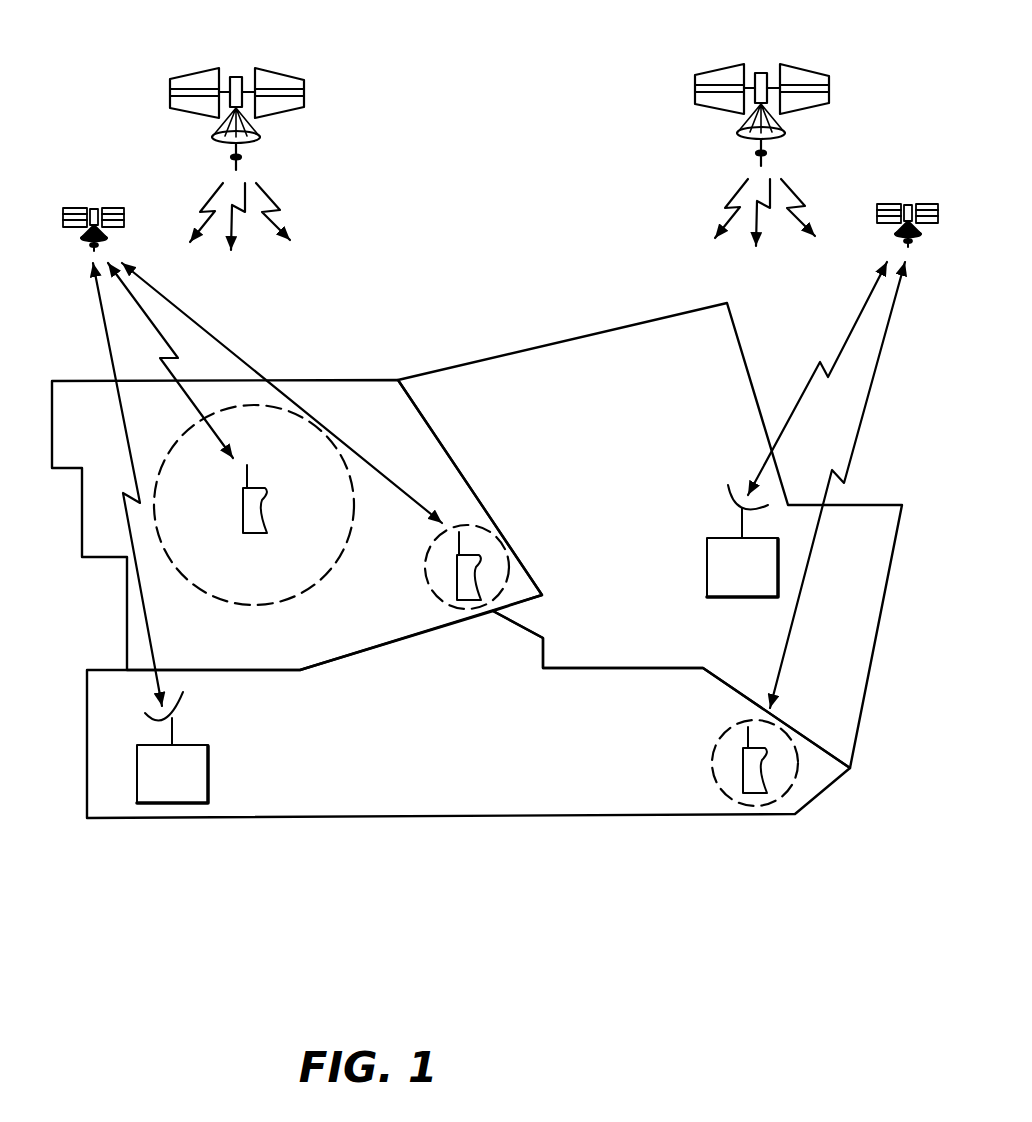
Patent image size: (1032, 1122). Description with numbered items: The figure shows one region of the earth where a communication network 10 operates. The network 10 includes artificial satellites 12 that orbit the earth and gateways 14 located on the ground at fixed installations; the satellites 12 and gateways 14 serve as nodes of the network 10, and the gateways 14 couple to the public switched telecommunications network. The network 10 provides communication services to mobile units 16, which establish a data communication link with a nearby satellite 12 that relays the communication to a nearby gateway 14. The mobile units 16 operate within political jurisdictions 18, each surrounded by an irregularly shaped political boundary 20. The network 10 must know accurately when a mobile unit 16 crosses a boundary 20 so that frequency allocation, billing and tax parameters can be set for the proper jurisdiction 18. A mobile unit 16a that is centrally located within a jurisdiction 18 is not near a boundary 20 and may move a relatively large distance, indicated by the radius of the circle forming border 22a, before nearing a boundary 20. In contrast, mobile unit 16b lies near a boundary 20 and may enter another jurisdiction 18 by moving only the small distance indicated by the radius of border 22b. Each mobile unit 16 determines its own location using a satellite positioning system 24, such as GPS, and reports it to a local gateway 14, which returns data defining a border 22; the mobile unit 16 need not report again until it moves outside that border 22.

The communication network 10 is at (441, 912).
The artificial satellites 12 is at (92, 197).
The gateways 14 is at (208, 762).
The mobile units 16 is at (740, 775).
The mobile unit 16a is at (258, 533).
The mobile unit 16b is at (455, 568).
The political jurisdictions 18 is at (484, 582).
The political boundaries 20 is at (557, 340).
The border 22 is at (727, 732).
The border 22a is at (205, 593).
The border 22b is at (428, 588).
The satellite positioning system 24 is at (308, 89).